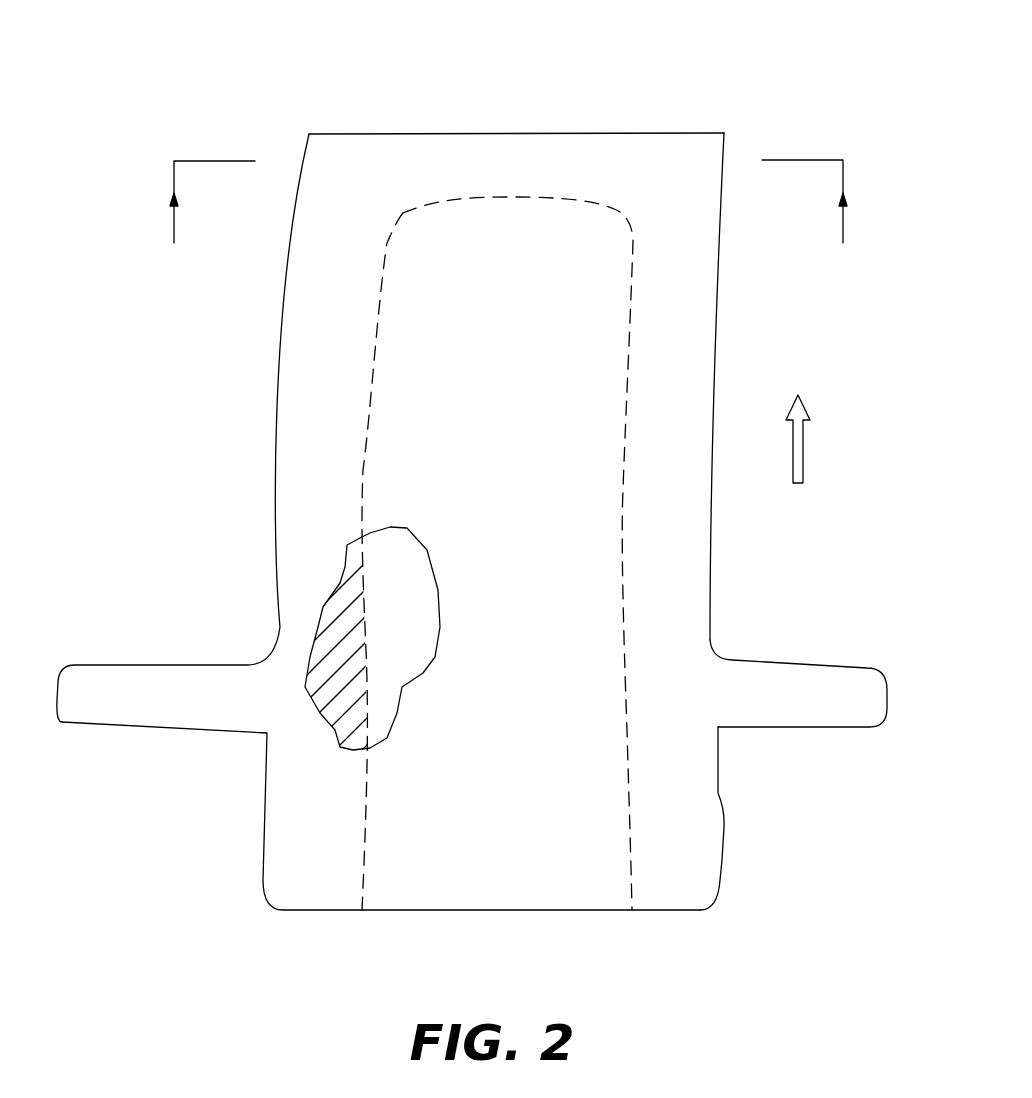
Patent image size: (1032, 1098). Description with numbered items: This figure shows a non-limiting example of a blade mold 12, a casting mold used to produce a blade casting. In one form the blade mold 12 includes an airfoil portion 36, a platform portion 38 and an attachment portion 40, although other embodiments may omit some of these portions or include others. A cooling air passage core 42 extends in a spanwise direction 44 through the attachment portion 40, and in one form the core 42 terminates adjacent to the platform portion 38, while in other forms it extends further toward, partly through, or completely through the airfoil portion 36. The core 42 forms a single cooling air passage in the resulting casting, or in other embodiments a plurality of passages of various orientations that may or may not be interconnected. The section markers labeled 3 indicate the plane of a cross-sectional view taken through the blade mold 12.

The blade mold 12 is at (472, 455).
The airfoil portion 36 is at (496, 132).
The platform portion 38 is at (820, 663).
The attachment portion 40 is at (723, 860).
The cooling air passage core 42 is at (362, 630).
The spanwise direction 44 is at (803, 447).
The section line 3- 3 is at (508, 225).